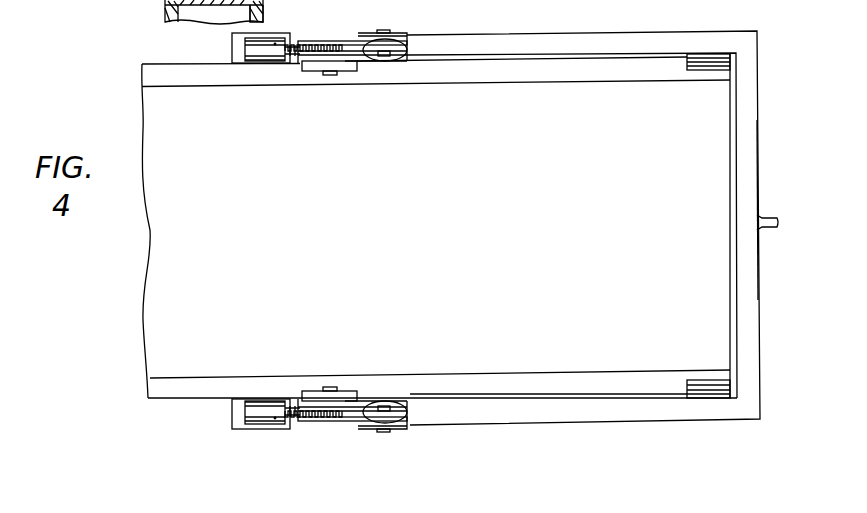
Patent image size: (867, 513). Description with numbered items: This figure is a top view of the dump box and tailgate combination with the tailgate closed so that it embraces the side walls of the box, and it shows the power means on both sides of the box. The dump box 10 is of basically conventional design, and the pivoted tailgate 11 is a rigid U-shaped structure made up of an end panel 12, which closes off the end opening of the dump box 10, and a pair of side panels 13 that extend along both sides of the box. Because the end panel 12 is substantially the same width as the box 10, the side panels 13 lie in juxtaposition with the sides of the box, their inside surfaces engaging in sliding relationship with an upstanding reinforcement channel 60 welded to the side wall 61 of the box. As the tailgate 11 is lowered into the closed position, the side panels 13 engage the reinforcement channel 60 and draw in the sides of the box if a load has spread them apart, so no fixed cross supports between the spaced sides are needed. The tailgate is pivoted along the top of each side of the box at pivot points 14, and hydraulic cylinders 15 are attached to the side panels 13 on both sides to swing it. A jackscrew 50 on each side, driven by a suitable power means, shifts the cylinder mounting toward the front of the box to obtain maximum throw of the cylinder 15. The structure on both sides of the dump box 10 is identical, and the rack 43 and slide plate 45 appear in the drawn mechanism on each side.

The dump box 10 is at (122, 313).
The tailgate 11 is at (780, 99).
The end panel 12 is at (757, 182).
The side panels 13 is at (591, 42).
The pivot points 14 is at (334, 75).
The hydraulic cylinders 15 is at (398, 56).
The rack 43 is at (320, 424).
The slide plate 45 is at (330, 42).
The jackscrew 50 is at (317, 60).
The reinforcement channel 60 is at (165, 10).
The side wall 61 is at (265, 10).